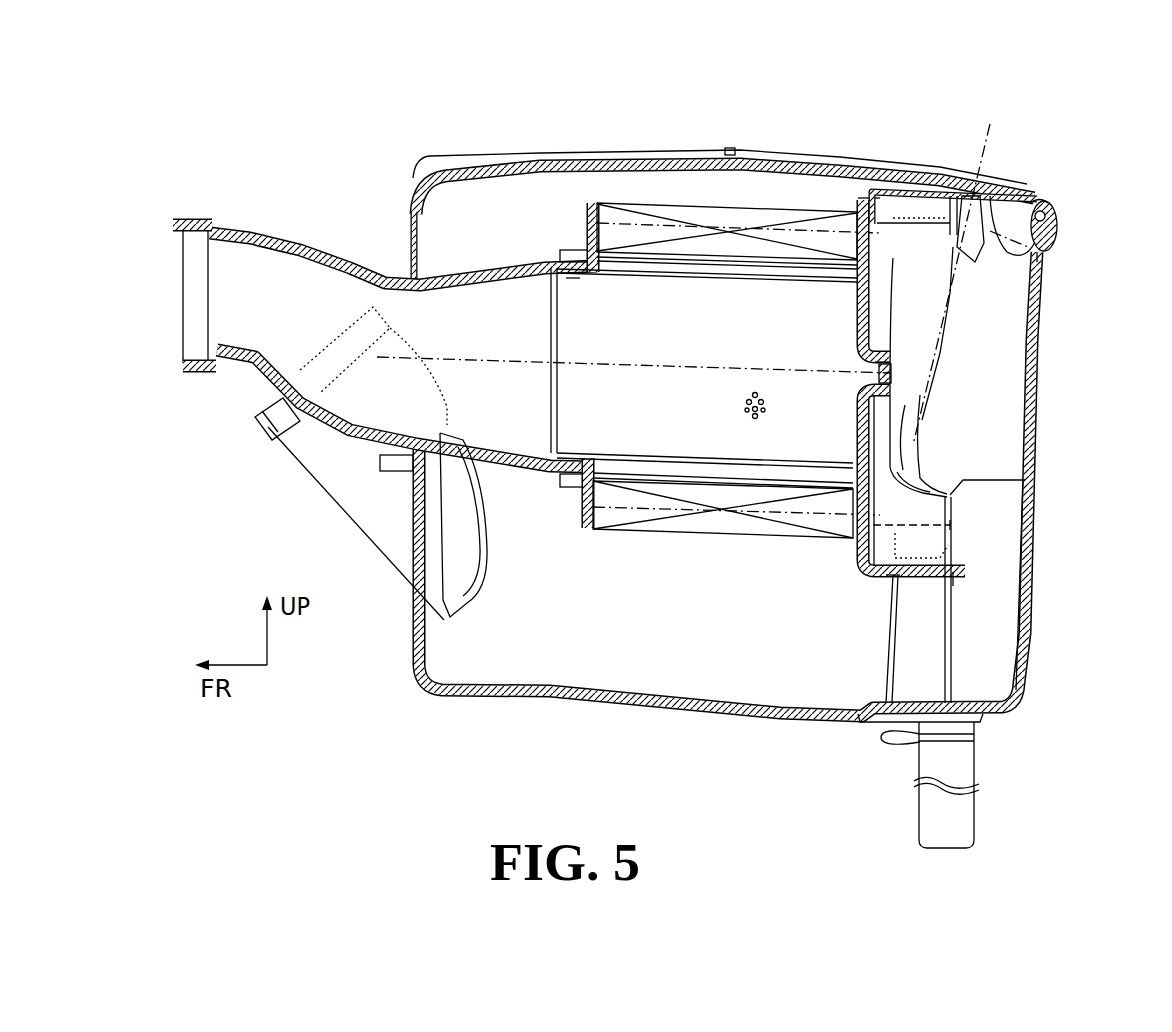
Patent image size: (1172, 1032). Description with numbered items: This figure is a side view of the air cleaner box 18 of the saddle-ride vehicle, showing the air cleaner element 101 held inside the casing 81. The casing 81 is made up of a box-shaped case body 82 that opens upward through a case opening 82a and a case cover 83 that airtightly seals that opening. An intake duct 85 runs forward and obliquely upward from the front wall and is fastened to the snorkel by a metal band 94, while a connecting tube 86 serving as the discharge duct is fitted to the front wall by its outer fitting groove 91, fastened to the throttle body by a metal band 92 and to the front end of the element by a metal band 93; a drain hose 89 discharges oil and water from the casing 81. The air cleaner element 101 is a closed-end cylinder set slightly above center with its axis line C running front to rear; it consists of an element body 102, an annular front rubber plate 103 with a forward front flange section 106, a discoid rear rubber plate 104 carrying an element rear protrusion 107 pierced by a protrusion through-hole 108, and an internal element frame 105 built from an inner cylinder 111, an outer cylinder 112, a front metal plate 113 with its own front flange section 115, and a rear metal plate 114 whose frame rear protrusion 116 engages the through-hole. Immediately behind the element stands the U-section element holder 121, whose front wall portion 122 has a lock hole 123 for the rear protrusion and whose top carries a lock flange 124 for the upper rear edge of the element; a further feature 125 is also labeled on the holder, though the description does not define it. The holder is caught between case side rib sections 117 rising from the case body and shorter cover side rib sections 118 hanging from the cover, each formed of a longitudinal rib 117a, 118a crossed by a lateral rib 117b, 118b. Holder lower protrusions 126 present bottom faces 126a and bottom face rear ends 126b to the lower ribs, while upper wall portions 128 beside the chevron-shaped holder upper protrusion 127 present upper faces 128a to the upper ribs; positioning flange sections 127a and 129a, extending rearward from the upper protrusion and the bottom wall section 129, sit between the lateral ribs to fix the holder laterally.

The air cleaner box 18 is at (873, 140).
The casing 81 is at (1129, 155).
The case body 82 is at (1038, 248).
The case opening 82a is at (1040, 197).
The case cover 83 is at (1050, 197).
The intake duct 85 is at (343, 507).
The connecting tube 86 is at (294, 240).
The drain hose 89 is at (963, 813).
The outer fitting groove 91 is at (410, 266).
The metal band 92 is at (188, 222).
The metal band 93 is at (560, 488).
The metal band 94 is at (254, 447).
The air cleaner element 101 is at (628, 540).
The element body 102 is at (680, 540).
The front rubber plate 103 is at (586, 228).
The rear rubber plate 104 is at (860, 215).
The element frame 105 is at (545, 307).
The front flange section 106 is at (562, 250).
The element rear protrusion 107 is at (897, 355).
The protrusion through-hole 108 is at (895, 373).
The inner cylinder 111 is at (698, 284).
The outer cylinder 112 is at (667, 264).
The front metal plate 113 is at (607, 264).
The rear metal plate 114 is at (856, 300).
The front flange section 115 is at (573, 284).
The frame rear protrusion 116 is at (858, 352).
The case side rib section 117 is at (876, 655).
The longitudinal rib 117a is at (891, 633).
The lateral rib 117b is at (937, 632).
The cover side rib section 118 is at (966, 265).
The longitudinal rib 118a is at (1000, 256).
The lateral rib 118b is at (1003, 202).
The element holder 121 is at (818, 175).
The front wall portion 122 is at (907, 438).
The lock hole 123 is at (907, 407).
The lock flange 124 is at (858, 200).
The projection 125 is at (917, 474).
The holder lower protrusion 126 is at (951, 510).
The bottom face 126a is at (947, 533).
The bottom face rear end 126b is at (951, 524).
The holder upper protrusion 127 is at (897, 188).
The positioning flange section 127a is at (958, 193).
The upper wall portion 128 is at (889, 258).
The upper face 128a is at (906, 208).
The bottom wall section 129 is at (953, 590).
The positioning flange section 129a is at (953, 580).
The axis line C is at (500, 360).